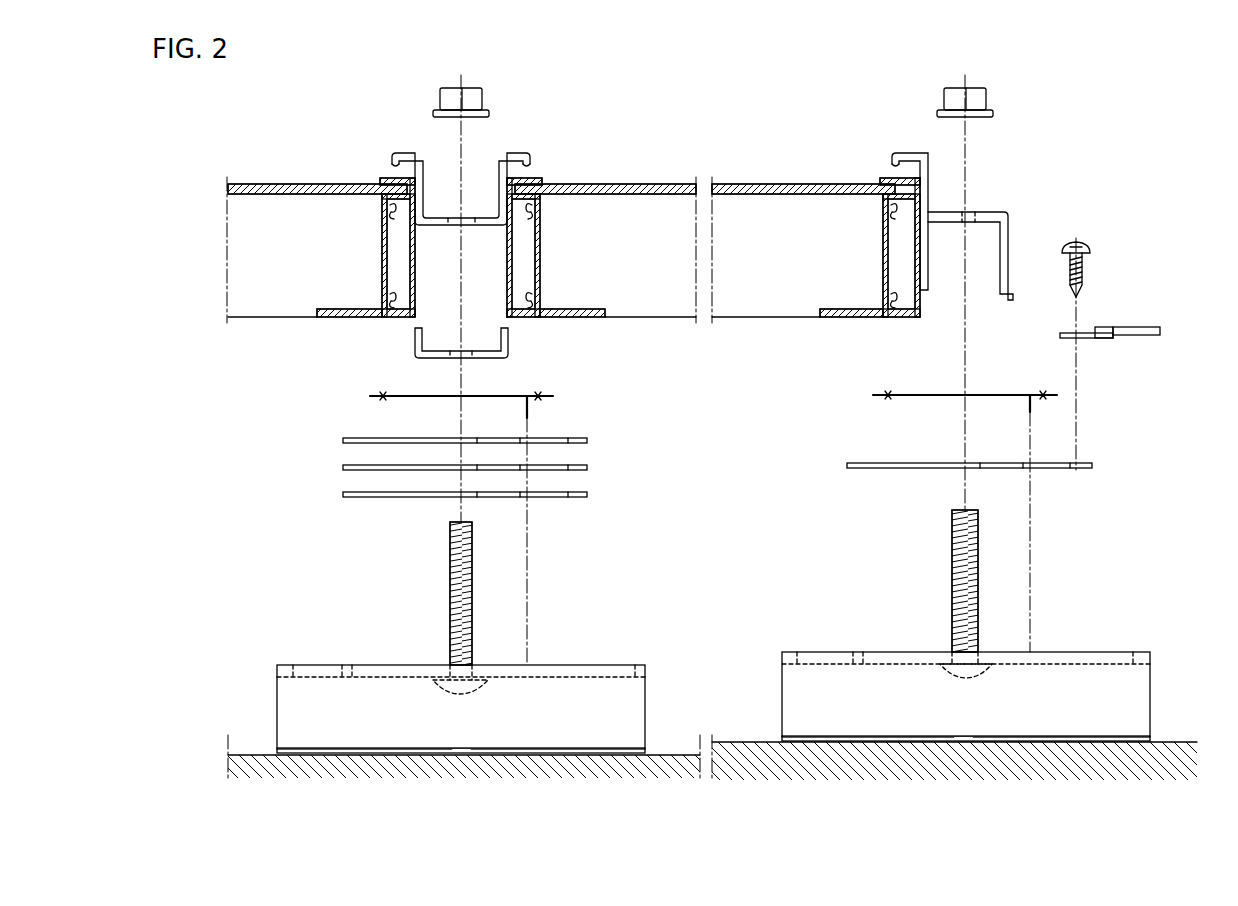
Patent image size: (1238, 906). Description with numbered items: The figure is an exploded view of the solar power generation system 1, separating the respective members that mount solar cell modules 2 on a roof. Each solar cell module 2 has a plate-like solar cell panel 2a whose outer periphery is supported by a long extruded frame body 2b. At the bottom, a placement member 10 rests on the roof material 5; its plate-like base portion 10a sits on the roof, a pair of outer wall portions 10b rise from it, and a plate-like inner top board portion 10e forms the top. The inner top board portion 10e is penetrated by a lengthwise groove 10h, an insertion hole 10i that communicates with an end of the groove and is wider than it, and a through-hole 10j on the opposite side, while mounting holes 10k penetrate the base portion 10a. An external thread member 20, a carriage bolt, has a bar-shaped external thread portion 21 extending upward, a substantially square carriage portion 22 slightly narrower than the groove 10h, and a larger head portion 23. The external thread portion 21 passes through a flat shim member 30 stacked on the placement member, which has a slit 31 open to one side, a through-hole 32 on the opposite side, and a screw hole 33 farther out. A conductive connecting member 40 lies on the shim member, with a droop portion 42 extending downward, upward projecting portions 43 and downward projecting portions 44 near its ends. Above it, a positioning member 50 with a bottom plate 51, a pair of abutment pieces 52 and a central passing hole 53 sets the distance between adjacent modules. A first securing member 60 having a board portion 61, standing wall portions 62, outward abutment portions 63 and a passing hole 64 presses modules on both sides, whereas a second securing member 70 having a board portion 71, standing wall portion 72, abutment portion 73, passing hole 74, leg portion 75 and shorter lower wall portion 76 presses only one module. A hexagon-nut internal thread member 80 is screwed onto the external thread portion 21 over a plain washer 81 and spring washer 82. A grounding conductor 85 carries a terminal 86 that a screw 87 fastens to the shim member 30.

The solar power generation system 1 is at (1135, 135).
The solar cell module 2 is at (250, 165).
The solar cell panel 2a is at (302, 183).
The frame body 2b is at (385, 245).
The roof material 5 is at (250, 757).
The placement member 10 is at (652, 660).
The base portion 10a is at (640, 748).
The outer wall portion 10b is at (640, 703).
The inner top board portion 10e is at (542, 665).
The groove 10h is at (350, 665).
The insertion hole 10i is at (635, 670).
The through-hole 10j is at (294, 672).
The mounting hole 10k is at (458, 748).
The external thread member 20 is at (443, 583).
The external thread portion 21 is at (472, 577).
The carriage portion 22 is at (472, 668).
The head portion 23 is at (470, 695).
The shim member 30 is at (335, 440).
The slit 31 is at (479, 445).
The through-hole 32 is at (522, 445).
The screw hole 33 is at (588, 440).
The connecting member 40 is at (573, 396).
The droop portion 42 is at (527, 405).
The upward projecting portion 43 is at (383, 393).
The downward projecting portion 44 is at (384, 400).
The positioning member 50 is at (470, 347).
The bottom plate 51 is at (445, 351).
The abutment piece 52 is at (413, 343).
The passing hole 53 is at (453, 359).
The first securing member 60 is at (392, 145).
The board portion 61 is at (440, 226).
The standing wall portion 62 is at (415, 178).
The abutment portion 63 is at (415, 152).
The passing hole 64 is at (466, 226).
The second securing member 70 is at (1020, 220).
The board portion 71 is at (975, 212).
The standing wall portion 72 is at (928, 170).
The abutment portion 73 is at (910, 152).
The passing hole 74 is at (968, 223).
The leg portion 75 is at (1008, 266).
The lower wall portion 76 is at (928, 262).
The internal thread member 80 is at (482, 97).
The plain washer 81 is at (472, 118).
The spring washer 82 is at (489, 113).
The grounding conductor 85 is at (1136, 326).
The terminal 86 is at (1062, 335).
The screw 87 is at (1090, 250).